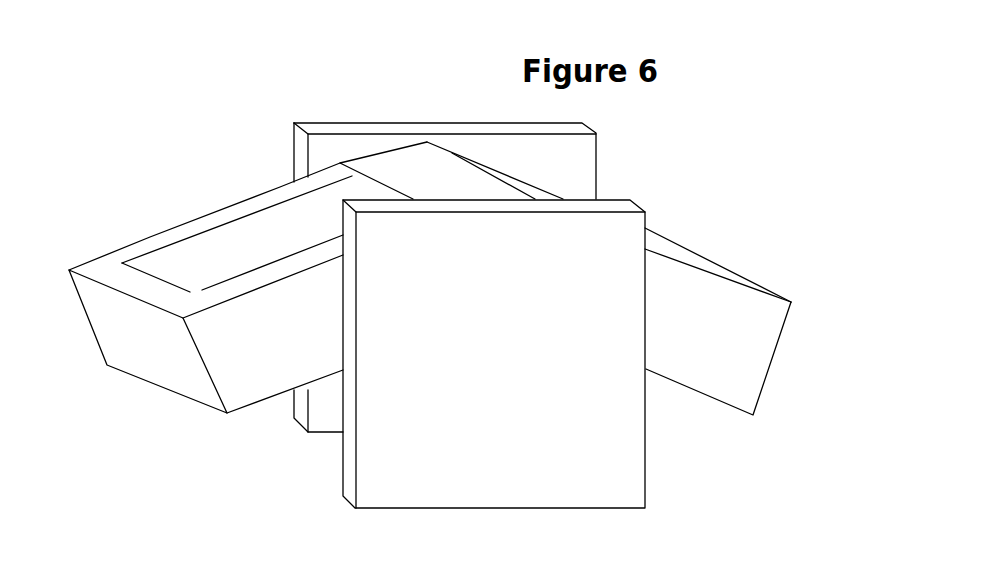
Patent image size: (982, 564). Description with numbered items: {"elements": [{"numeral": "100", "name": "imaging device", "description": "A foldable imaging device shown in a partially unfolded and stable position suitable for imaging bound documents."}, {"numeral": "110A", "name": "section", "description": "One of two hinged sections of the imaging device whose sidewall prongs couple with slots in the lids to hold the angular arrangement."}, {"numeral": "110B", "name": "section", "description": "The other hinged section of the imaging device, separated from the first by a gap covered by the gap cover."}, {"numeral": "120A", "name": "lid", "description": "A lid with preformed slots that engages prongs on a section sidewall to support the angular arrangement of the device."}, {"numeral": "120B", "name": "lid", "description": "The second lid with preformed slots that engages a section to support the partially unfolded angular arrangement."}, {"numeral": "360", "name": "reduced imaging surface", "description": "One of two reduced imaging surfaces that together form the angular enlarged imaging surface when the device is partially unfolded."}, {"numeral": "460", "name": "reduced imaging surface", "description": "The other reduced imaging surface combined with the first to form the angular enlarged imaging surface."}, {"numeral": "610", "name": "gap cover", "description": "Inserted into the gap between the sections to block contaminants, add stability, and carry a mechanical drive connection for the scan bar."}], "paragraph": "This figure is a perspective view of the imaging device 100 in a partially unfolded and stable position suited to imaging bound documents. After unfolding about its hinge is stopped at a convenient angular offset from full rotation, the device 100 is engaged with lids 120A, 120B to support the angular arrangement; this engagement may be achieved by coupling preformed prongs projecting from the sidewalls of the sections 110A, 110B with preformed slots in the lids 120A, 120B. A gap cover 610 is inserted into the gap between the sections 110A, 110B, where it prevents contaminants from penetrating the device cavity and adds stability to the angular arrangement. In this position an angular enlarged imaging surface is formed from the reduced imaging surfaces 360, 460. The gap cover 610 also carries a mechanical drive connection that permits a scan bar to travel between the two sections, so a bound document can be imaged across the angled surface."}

The optical assembly 100 is at (728, 212).
The first wedge element 110A is at (163, 407).
The second wedge element 110B is at (783, 352).
The front plate 120A is at (650, 442).
The back plate 120B is at (280, 137).
The groove 360 is at (214, 251).
The mating surface 460 is at (688, 228).
The ridge 610 is at (427, 160).